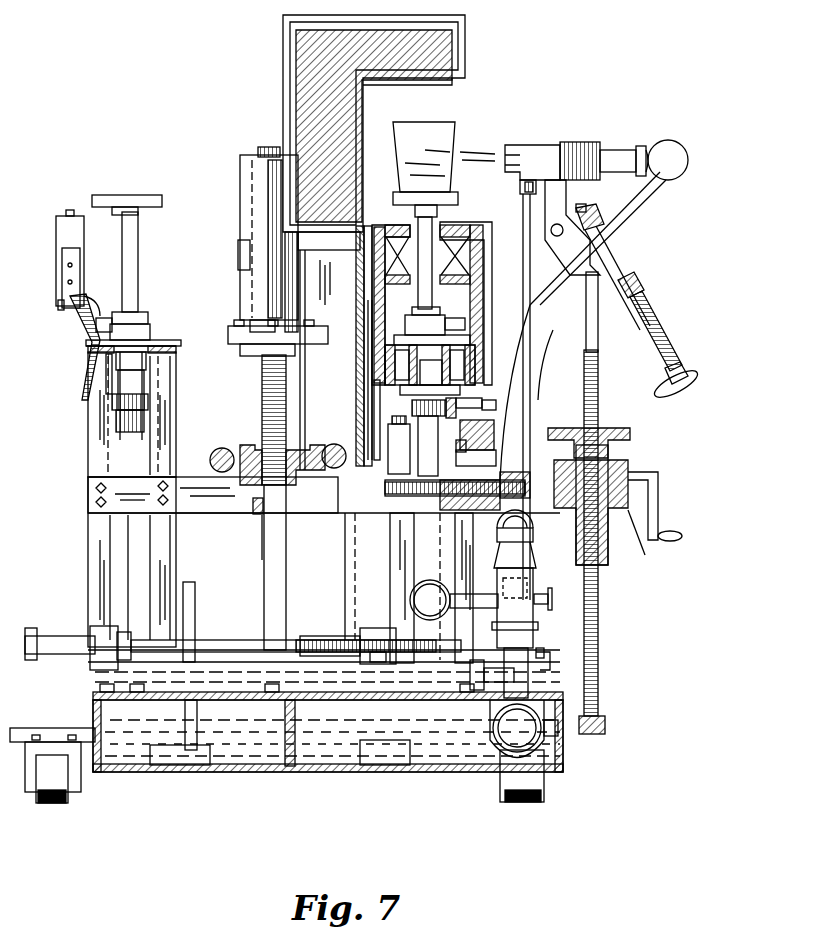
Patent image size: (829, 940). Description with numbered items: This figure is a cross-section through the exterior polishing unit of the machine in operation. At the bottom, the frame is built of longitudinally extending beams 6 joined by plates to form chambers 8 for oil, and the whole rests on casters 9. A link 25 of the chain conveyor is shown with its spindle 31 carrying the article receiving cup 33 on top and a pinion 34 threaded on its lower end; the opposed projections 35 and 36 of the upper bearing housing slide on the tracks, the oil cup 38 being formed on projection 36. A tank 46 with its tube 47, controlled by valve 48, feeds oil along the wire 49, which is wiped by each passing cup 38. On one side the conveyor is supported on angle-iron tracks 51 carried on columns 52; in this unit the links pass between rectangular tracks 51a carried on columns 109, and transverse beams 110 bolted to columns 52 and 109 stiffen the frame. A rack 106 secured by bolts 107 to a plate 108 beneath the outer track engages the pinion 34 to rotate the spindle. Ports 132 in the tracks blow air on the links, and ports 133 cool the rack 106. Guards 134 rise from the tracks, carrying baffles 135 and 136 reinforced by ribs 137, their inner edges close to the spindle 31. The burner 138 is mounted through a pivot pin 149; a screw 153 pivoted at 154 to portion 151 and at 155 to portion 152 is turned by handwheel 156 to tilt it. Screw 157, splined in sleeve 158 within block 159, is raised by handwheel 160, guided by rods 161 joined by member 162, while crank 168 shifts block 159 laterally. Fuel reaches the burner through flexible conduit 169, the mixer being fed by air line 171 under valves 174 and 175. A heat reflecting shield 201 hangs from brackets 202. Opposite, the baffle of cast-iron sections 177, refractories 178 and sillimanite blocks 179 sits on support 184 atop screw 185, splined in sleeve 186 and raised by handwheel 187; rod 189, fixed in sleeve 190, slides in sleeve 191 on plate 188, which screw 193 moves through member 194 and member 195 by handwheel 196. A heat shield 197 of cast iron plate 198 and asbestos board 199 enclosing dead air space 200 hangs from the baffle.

The longitudinally extending beams 6 is at (95, 712).
The chambers 8 is at (437, 738).
The casters 9 is at (62, 792).
The links 25 is at (148, 368).
The spindle 31 is at (138, 244).
The cup 33 is at (130, 200).
The pinion 34 is at (131, 432).
The projection 35 is at (152, 342).
The projection 36 is at (108, 347).
The oil cup 38 is at (98, 326).
The tanks 46 is at (66, 235).
The tube 47 is at (86, 300).
The valve 48 is at (58, 306).
The wire 49 is at (72, 322).
The tracks 51 is at (108, 369).
The tracks 51a is at (388, 363).
The columns 52 is at (100, 411).
The rack 106 is at (484, 401).
The bolts 107 is at (498, 411).
The plate 108 is at (498, 431).
The columns 109 is at (468, 567).
The transversely extending beams 110 is at (216, 500).
The ports 132 is at (384, 383).
The ports 133 is at (462, 411).
The guards 134 is at (484, 258).
The upper baffle 135 is at (446, 236).
The lower baffle 136 is at (484, 282).
The ribs 137 is at (488, 246).
The burner 138 is at (562, 150).
The pivot pin 149 is at (560, 241).
The outwardly projecting portion 151 is at (603, 223).
The depending portion 152 is at (612, 279).
The screw 153 is at (648, 321).
The pivot 154 is at (604, 237).
The pivot 155 is at (642, 289).
The handwheel 156 is at (672, 375).
The screw 157 is at (600, 696).
The sleeve 158 is at (576, 551).
The block 159 is at (660, 540).
The handwheel 160 is at (632, 434).
The depending rods 161 is at (596, 291).
The member 162 is at (606, 721).
The crank 168 is at (656, 505).
The flexible conduit 169 is at (615, 237).
The air line 171 is at (520, 737).
The valve 174 is at (548, 659).
The valve 175 is at (552, 601).
The cast-iron sections 177 is at (290, 22).
The insulating refractories 178 is at (418, 50).
The sillimanite blocks 179 is at (370, 112).
The support 184 is at (326, 248).
The screw 185 is at (262, 395).
The sleeve 186 is at (292, 536).
The handwheel 187 is at (235, 448).
The plate 188 is at (338, 642).
The rod 189 is at (260, 148).
The sleeve 190 is at (245, 175).
The sleeve 191 is at (256, 584).
The screw 193 is at (320, 638).
The upstanding member 194 is at (372, 640).
The upstanding member 195 is at (520, 631).
The handwheel 196 is at (514, 679).
The heat shield 197 is at (356, 346).
The cast iron plate 198 is at (366, 405).
The asbestos board 199 is at (372, 419).
The dead air space 200 is at (376, 431).
The heat reflecting shield 201 is at (530, 331).
The brackets 202 is at (538, 193).